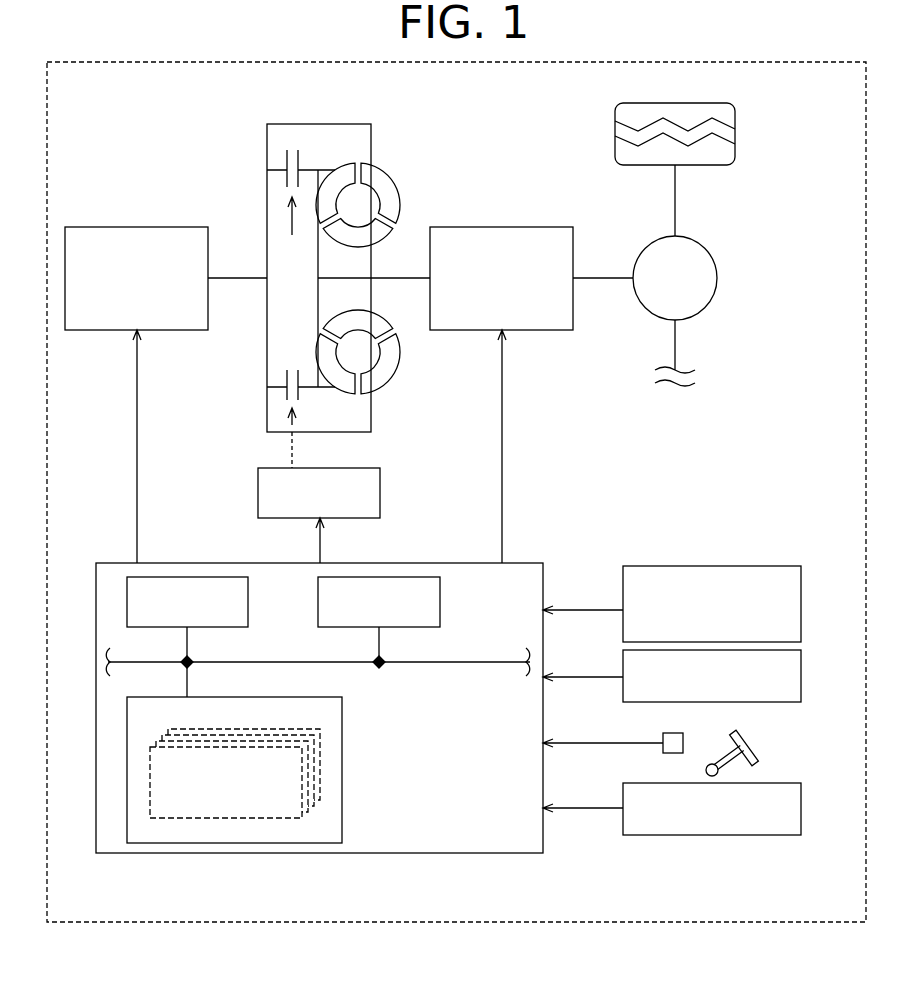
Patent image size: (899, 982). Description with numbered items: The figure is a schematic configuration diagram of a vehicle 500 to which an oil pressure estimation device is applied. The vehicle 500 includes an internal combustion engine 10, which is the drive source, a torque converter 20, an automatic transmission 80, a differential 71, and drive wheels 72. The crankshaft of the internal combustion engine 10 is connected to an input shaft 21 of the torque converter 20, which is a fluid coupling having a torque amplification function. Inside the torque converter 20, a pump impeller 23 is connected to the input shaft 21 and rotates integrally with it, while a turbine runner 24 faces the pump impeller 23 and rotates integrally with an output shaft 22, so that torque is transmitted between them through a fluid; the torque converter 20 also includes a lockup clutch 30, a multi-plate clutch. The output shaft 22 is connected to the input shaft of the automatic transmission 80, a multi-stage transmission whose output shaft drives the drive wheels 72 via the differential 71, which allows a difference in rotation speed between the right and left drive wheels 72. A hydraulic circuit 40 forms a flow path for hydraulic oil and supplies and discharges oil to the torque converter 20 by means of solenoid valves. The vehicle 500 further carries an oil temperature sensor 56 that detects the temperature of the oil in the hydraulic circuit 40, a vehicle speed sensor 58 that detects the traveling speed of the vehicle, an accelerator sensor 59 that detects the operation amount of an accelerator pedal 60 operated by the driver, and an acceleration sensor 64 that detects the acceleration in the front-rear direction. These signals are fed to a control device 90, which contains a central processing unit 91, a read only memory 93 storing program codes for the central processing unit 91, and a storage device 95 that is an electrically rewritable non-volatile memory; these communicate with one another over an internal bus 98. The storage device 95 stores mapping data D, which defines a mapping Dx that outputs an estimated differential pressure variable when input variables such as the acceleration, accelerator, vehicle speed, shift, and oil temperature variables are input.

The vehicle 500 is at (770, 52).
The internal combustion engine 10 is at (177, 227).
The torque converter 20 is at (415, 105).
The input shaft 21 is at (237, 273).
The output shaft 22 is at (362, 278).
The pump impeller 23 is at (389, 176).
The turbine runner 24 is at (345, 172).
The lockup clutch 30 is at (294, 236).
The hydraulic circuit 40 is at (258, 491).
The differential 71 is at (717, 276).
The drive wheels 72 is at (735, 120).
The automatic transmission 80 is at (536, 227).
The control device 90 is at (385, 854).
The central processing unit (CPU) 91 is at (250, 604).
The read only memory (ROM) 93 is at (442, 603).
The storage device 95 is at (297, 697).
The internal bus 98 is at (440, 662).
The mapping data D is at (212, 832).
The mapping Dx is at (265, 822).
The oil temperature sensor 56 is at (801, 608).
The vehicle speed sensor 58 is at (801, 675).
The accelerator sensor 59 is at (675, 733).
The accelerator pedal 60 is at (758, 740).
The acceleration sensor 64 is at (801, 808).